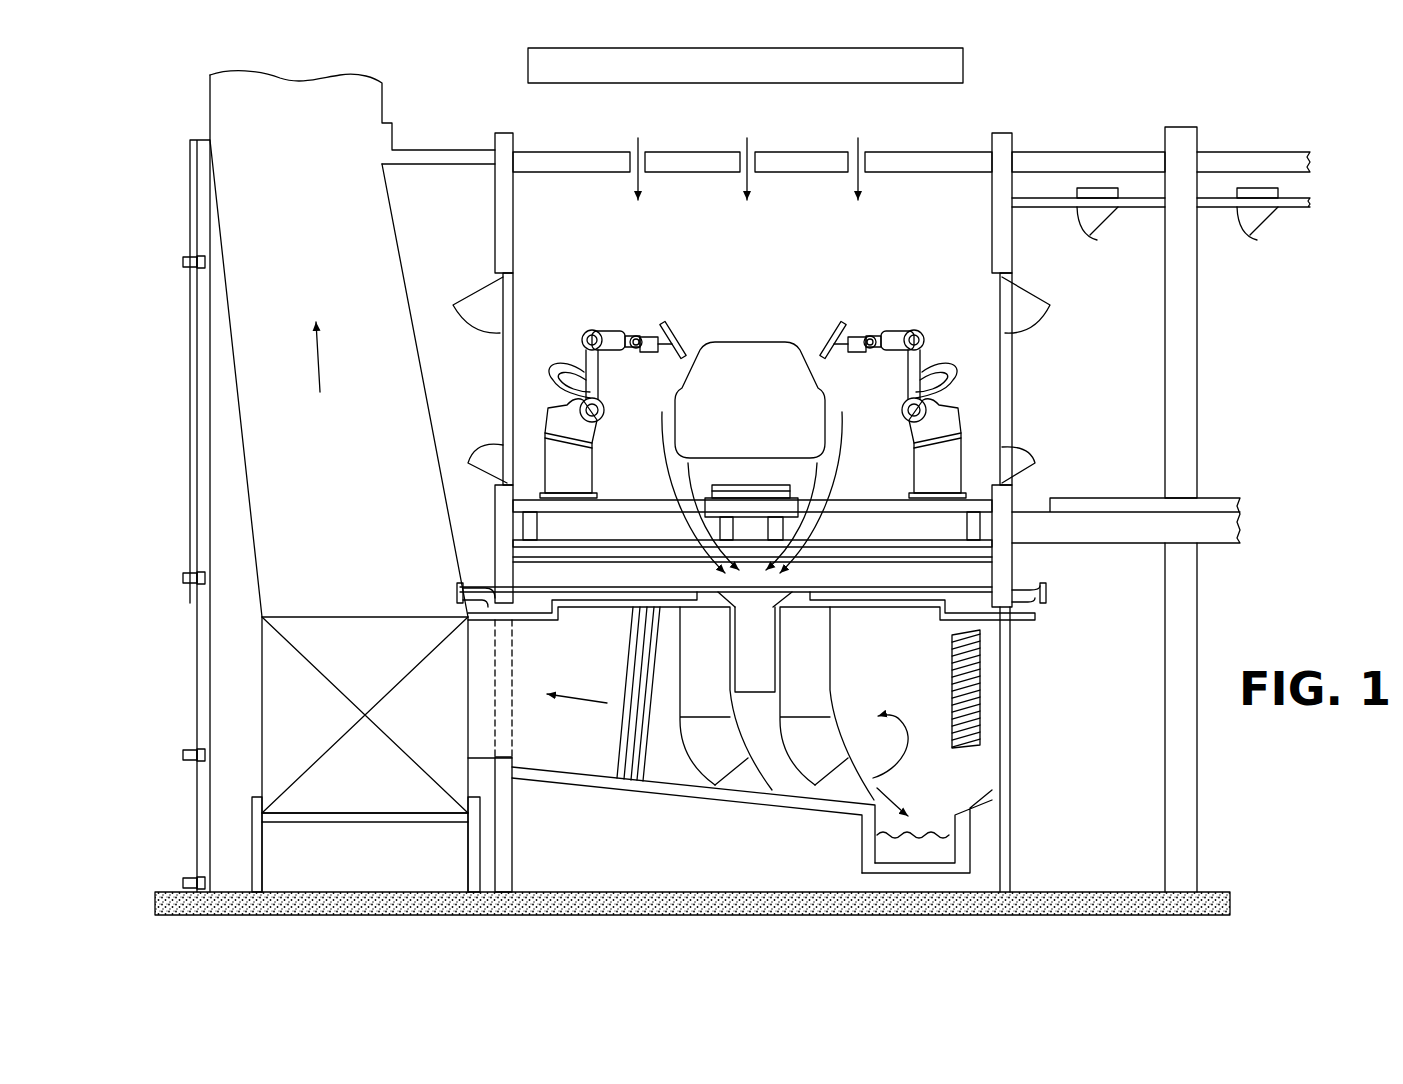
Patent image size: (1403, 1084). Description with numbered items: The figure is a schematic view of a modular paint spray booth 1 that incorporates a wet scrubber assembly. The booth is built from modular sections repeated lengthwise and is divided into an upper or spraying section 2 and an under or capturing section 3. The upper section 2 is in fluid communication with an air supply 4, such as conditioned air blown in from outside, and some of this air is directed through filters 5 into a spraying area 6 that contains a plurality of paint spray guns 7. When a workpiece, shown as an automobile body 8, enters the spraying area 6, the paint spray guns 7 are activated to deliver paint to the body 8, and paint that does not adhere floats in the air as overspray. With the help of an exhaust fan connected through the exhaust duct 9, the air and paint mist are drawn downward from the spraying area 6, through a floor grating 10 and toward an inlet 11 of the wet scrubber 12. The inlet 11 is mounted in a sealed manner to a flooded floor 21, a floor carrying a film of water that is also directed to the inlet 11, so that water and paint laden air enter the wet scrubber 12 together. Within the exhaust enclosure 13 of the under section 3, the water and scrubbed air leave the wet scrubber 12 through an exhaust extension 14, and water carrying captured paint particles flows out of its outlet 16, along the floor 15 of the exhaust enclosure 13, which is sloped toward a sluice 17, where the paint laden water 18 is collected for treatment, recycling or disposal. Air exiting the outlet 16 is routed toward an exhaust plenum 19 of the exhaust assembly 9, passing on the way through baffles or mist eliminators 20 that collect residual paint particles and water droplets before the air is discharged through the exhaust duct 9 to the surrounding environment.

The modular paint spray booth 1 is at (1225, 58).
The upper or spraying section 2 is at (1030, 370).
The under or capturing section 3 is at (1032, 690).
The air supply 4 is at (645, 158).
The filters 5 is at (965, 63).
The spraying area 6 is at (575, 240).
The paint spray guns 7 is at (626, 330).
The automobile body 8 is at (750, 400).
The exhaust duct 9 is at (226, 352).
The floor grating 10 is at (937, 517).
The inlet 11 is at (733, 593).
The wet scrubber 12 is at (832, 647).
The exhaust enclosure 13 is at (622, 796).
The exhaust extension 14 is at (777, 703).
The floor 15 is at (600, 786).
The outlet 16 is at (750, 785).
The sluice 17 is at (973, 843).
The paint laden water 18 is at (912, 853).
The exhaust plenum 19 is at (377, 783).
The mist eliminators 20 is at (627, 676).
The flooded floor 21 is at (563, 587).